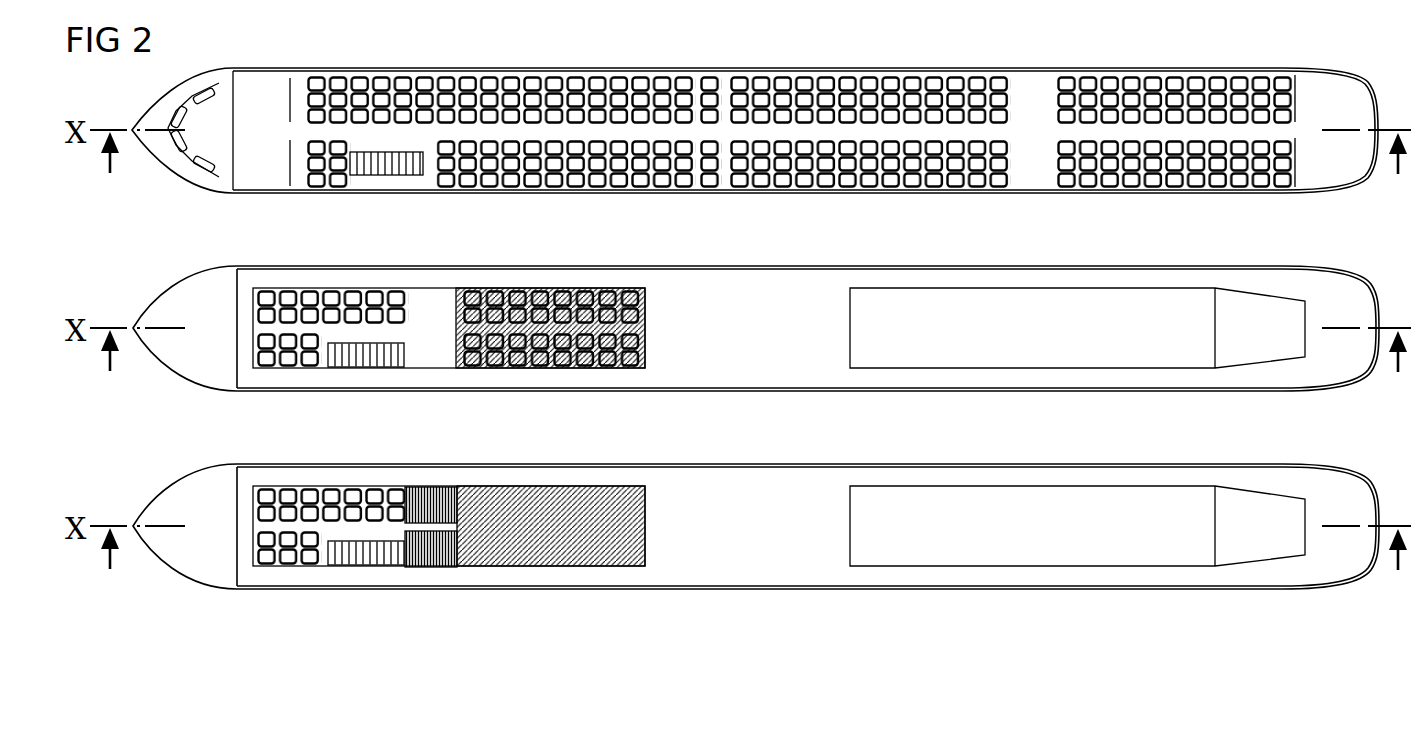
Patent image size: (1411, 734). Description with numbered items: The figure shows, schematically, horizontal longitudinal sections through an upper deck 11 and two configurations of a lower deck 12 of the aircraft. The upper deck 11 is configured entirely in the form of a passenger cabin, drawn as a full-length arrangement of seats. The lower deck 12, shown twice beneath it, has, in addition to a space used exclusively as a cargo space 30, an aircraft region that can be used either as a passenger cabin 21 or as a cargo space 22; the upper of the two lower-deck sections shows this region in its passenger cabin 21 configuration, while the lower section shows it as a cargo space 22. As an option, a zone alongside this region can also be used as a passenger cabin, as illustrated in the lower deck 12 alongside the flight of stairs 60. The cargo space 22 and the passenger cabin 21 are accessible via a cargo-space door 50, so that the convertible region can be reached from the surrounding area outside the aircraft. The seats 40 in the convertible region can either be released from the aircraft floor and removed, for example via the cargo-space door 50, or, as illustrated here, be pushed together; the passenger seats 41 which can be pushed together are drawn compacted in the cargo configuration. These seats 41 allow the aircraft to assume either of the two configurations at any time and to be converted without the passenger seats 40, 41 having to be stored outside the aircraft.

The upper deck 11 is at (897, 64).
The lower deck 12 is at (897, 264).
The passenger cabin 21 is at (638, 325).
The cargo space 22 is at (637, 518).
The cargo space 30 is at (1076, 302).
The seats 40 is at (543, 298).
The passenger seats which can be pushed together 41 is at (445, 490).
The cargo-space door 50 is at (437, 267).
The flight of stairs 60 is at (367, 176).